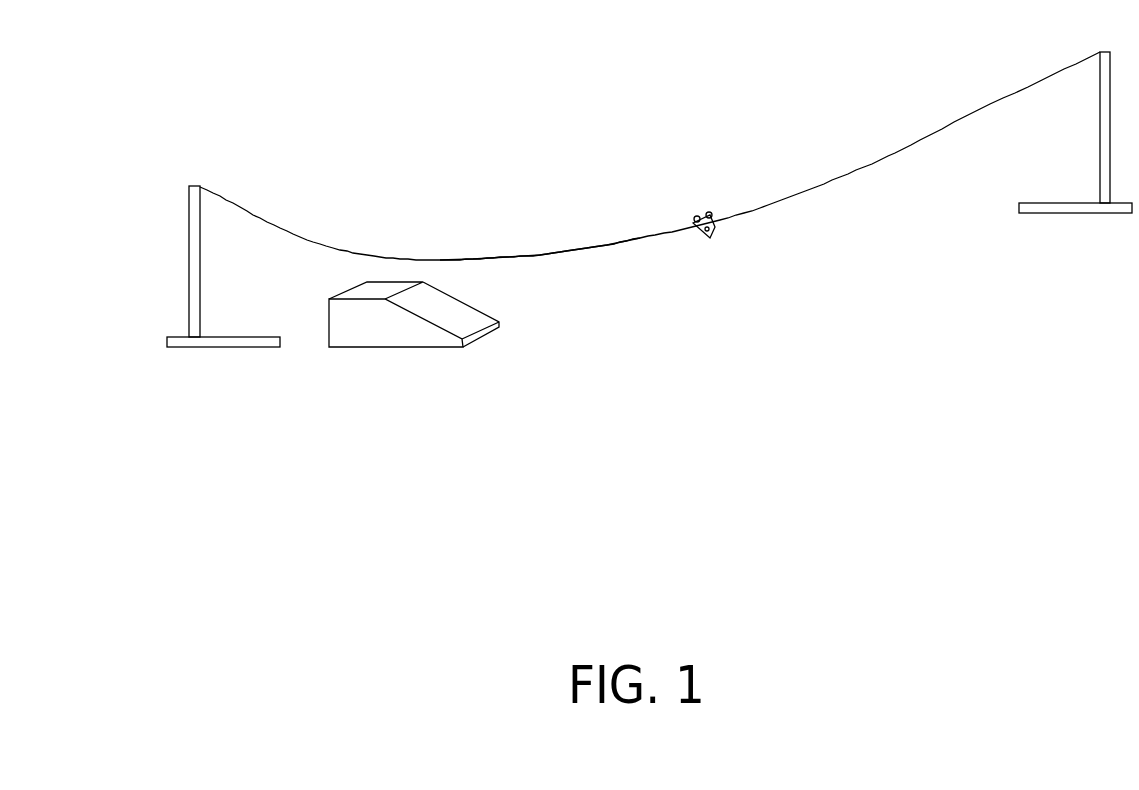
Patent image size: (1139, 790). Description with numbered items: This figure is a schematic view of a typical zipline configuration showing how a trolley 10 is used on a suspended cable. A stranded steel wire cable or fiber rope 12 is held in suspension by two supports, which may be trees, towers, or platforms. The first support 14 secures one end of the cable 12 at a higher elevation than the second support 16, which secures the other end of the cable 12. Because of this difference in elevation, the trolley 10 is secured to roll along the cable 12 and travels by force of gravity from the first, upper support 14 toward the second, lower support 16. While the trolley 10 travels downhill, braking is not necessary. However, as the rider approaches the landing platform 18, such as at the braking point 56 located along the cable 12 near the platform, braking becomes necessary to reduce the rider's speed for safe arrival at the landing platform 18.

The trolley 10 is at (703, 213).
The cable 12 is at (978, 110).
The first support 14 is at (1100, 127).
The second support 16 is at (200, 253).
The landing platform 18 is at (392, 337).
The braking point 56 is at (550, 255).